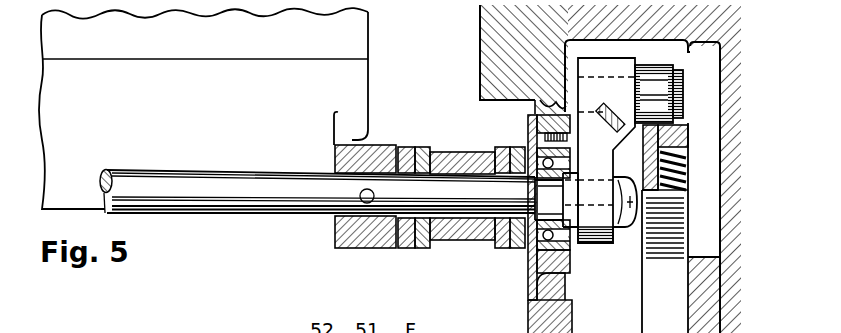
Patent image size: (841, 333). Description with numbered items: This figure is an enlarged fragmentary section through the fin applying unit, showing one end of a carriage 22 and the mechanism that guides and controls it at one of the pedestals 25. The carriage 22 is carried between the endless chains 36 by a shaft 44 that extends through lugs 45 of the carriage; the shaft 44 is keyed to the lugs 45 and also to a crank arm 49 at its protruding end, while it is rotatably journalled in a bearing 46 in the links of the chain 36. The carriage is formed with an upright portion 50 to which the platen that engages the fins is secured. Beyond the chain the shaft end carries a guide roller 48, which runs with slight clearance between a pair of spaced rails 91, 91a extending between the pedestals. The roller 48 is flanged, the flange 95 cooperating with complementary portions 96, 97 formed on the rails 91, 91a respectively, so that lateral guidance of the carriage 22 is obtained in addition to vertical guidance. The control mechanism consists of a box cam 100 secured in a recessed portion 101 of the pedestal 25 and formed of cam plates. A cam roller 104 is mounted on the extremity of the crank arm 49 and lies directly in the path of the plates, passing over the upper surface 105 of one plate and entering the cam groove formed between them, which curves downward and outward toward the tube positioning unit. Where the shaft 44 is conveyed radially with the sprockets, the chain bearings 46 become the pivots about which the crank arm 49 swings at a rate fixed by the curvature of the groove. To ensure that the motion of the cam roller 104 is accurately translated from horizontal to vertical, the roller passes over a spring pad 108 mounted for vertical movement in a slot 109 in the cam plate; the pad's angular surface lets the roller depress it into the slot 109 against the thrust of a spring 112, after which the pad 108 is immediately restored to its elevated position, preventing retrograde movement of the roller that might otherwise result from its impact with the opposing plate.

The carriage 22 is at (368, 42).
The pedestal 25 is at (698, 282).
The endless chain 36 is at (483, 249).
The shaft 44 is at (231, 216).
The lug 45 is at (367, 249).
The bearing 46 is at (434, 222).
The guide roller 48 is at (527, 270).
The crank arm 49 is at (592, 246).
The upright portion 50 is at (216, 84).
The rail 91 is at (480, 67).
The rail 91a is at (529, 319).
The flange 95 is at (529, 122).
The complementary portion 96 is at (537, 105).
The complementary portion 97 is at (566, 296).
The box cam 100 is at (646, 322).
The recessed portion 101 is at (706, 244).
The cam roller 104 is at (663, 92).
The upper surface 105 is at (685, 112).
The spring pad 108 is at (689, 135).
The slot 109 is at (690, 166).
The spring 112 is at (688, 176).